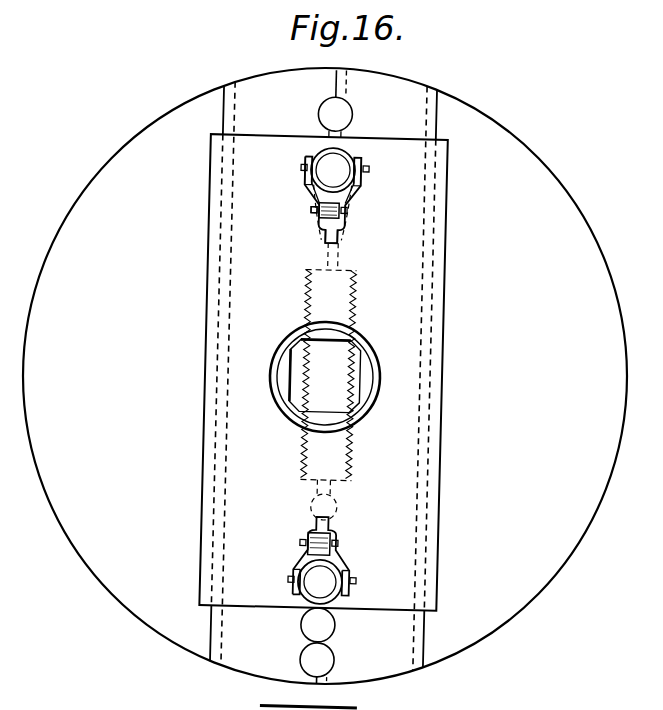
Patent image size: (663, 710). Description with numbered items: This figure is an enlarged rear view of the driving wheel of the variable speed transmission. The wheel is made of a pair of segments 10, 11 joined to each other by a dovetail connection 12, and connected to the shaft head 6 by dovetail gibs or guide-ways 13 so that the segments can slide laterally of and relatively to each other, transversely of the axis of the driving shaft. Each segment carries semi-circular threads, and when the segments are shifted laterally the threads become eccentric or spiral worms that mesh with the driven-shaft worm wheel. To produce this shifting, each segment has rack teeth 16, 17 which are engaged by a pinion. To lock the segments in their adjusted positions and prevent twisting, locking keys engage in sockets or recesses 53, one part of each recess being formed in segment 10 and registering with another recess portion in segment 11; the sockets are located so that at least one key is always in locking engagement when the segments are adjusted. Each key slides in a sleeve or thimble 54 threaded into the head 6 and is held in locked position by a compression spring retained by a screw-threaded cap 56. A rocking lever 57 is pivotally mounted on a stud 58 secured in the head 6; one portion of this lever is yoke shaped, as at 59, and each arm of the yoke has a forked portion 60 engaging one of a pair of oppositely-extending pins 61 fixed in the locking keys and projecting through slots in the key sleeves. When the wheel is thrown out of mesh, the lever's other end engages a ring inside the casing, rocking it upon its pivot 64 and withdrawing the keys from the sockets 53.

The head 6 is at (277, 383).
The wheel segment 10 is at (476, 376).
The wheel segment 11 is at (174, 376).
The dovetail connection 12 is at (336, 80).
The dovetail gibs or guide-ways 13 is at (227, 106).
The rack teeth 16 is at (344, 360).
The rack teeth 17 is at (307, 374).
The sockets or recesses 53 is at (314, 108).
The sleeve or thimble 54 is at (356, 178).
The screw-threaded cap 56 is at (318, 172).
The rocking lever 57 is at (337, 235).
The stud 58 is at (343, 210).
The yoke shaped portion 59 is at (310, 195).
The forked portion 60 is at (305, 158).
The pins 61 is at (364, 169).
The pivot 64 is at (308, 212).